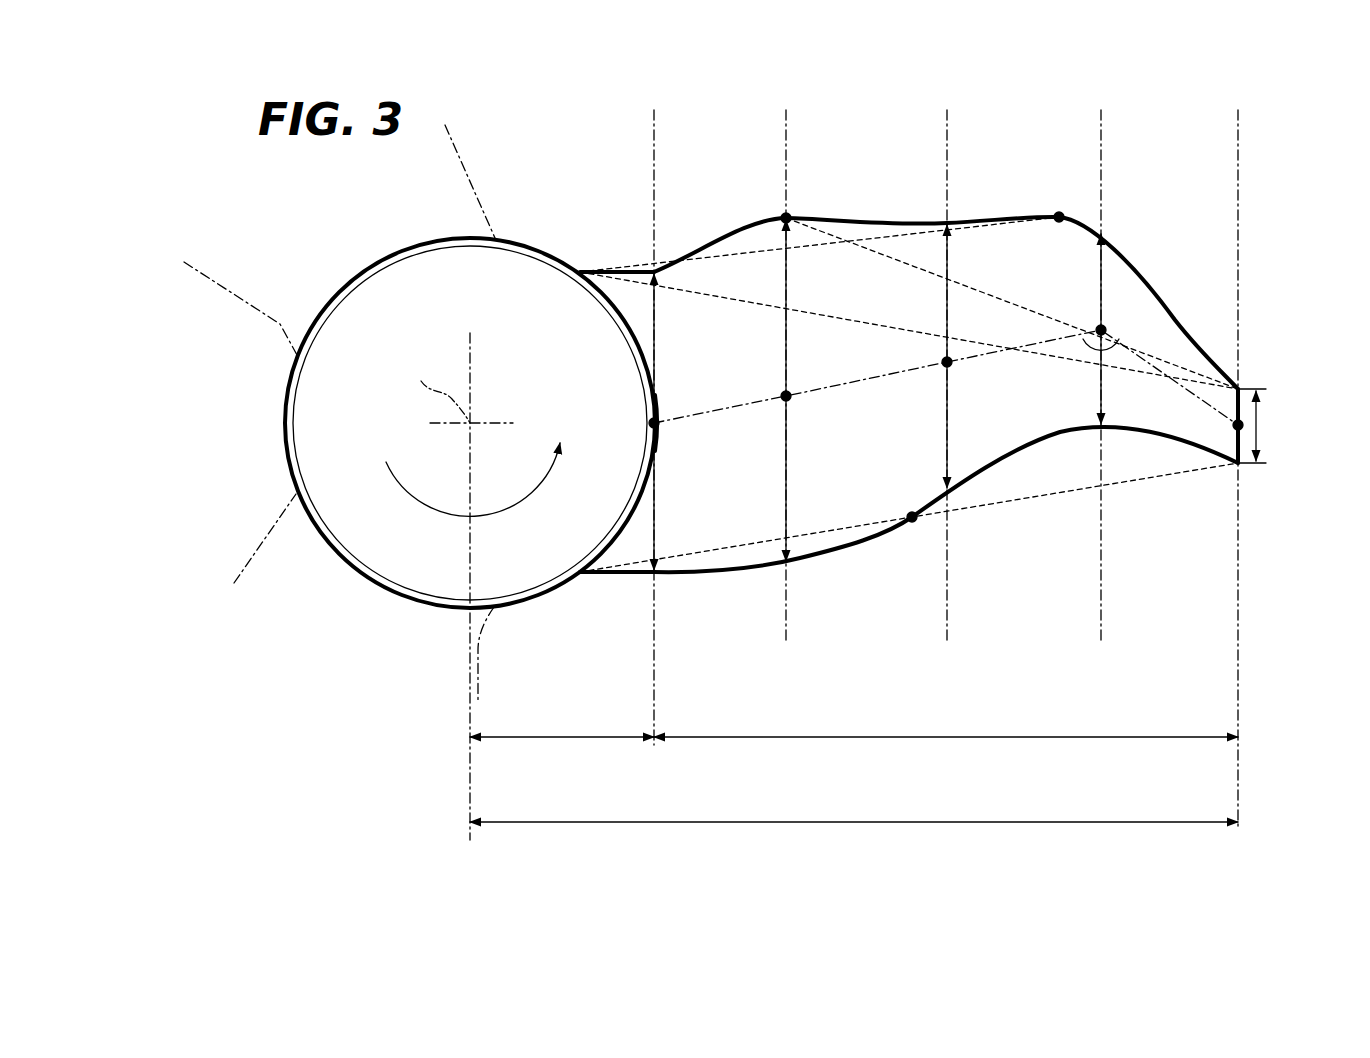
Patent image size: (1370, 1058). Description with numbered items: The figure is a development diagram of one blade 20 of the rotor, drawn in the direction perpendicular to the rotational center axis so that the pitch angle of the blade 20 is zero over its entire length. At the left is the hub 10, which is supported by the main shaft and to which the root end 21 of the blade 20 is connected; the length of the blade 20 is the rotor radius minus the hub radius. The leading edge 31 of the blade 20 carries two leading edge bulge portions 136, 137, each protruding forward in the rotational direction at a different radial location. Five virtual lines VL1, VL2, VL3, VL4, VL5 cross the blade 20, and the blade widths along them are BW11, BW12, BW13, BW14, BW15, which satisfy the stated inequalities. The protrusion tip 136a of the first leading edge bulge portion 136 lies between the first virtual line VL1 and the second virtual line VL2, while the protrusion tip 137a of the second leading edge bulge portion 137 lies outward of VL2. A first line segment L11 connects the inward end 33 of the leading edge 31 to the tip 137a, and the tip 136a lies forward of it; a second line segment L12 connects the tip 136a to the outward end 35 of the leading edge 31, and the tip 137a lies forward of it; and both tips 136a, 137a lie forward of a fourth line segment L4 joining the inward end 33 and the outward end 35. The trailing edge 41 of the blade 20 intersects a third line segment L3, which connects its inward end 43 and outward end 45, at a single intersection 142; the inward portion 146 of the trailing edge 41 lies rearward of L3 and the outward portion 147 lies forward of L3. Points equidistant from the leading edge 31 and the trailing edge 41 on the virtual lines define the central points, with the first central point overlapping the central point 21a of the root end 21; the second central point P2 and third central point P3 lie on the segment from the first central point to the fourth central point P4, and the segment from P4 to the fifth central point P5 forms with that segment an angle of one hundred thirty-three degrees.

The hub 10 is at (362, 422).
The blade 20 is at (1059, 291).
The root end 21 is at (654, 492).
The central point of root end 21a is at (657, 427).
The leading edge 31 is at (905, 259).
The inward end of leading edge 33 is at (581, 268).
The outward end of leading edge 35 is at (1241, 386).
The trailing edge 41 is at (903, 534).
The inward end of trailing edge 43 is at (578, 575).
The outward end of trailing edge 45 is at (1241, 466).
The first leading edge bulge portion 136 is at (733, 233).
The protrusion tip of first leading edge bulge portion 136a is at (787, 215).
The second leading edge bulge portion 137 is at (1078, 220).
The protrusion tip of second leading edge bulge portion 137a is at (1058, 214).
The intersection 142 is at (912, 521).
The inward portion of trailing edge 146 is at (820, 566).
The outward portion of trailing edge 147 is at (1043, 452).
The third line segment L3 is at (1143, 482).
The fourth line segment L4 is at (703, 300).
The first line segment L11 is at (743, 258).
The second line segment L12 is at (893, 262).
The first virtual line VL1 is at (652, 416).
The second virtual line VL2 is at (945, 364).
The third virtual line VL3 is at (784, 364).
The fourth virtual line VL4 is at (1099, 364).
The fifth virtual line VL5 is at (1236, 459).
The width of blade along first virtual line BW11 is at (656, 346).
The width of blade along second virtual line BW12 is at (945, 412).
The width of blade along third virtual line BW13 is at (789, 430).
The width of blade along fourth virtual line BW14 is at (1099, 412).
The width of blade along fifth virtual line BW15 is at (1262, 430).
The second central point P2 is at (948, 364).
The third central point P3 is at (787, 395).
The fourth central point P4 is at (1103, 330).
The fifth central point P5 is at (1236, 425).